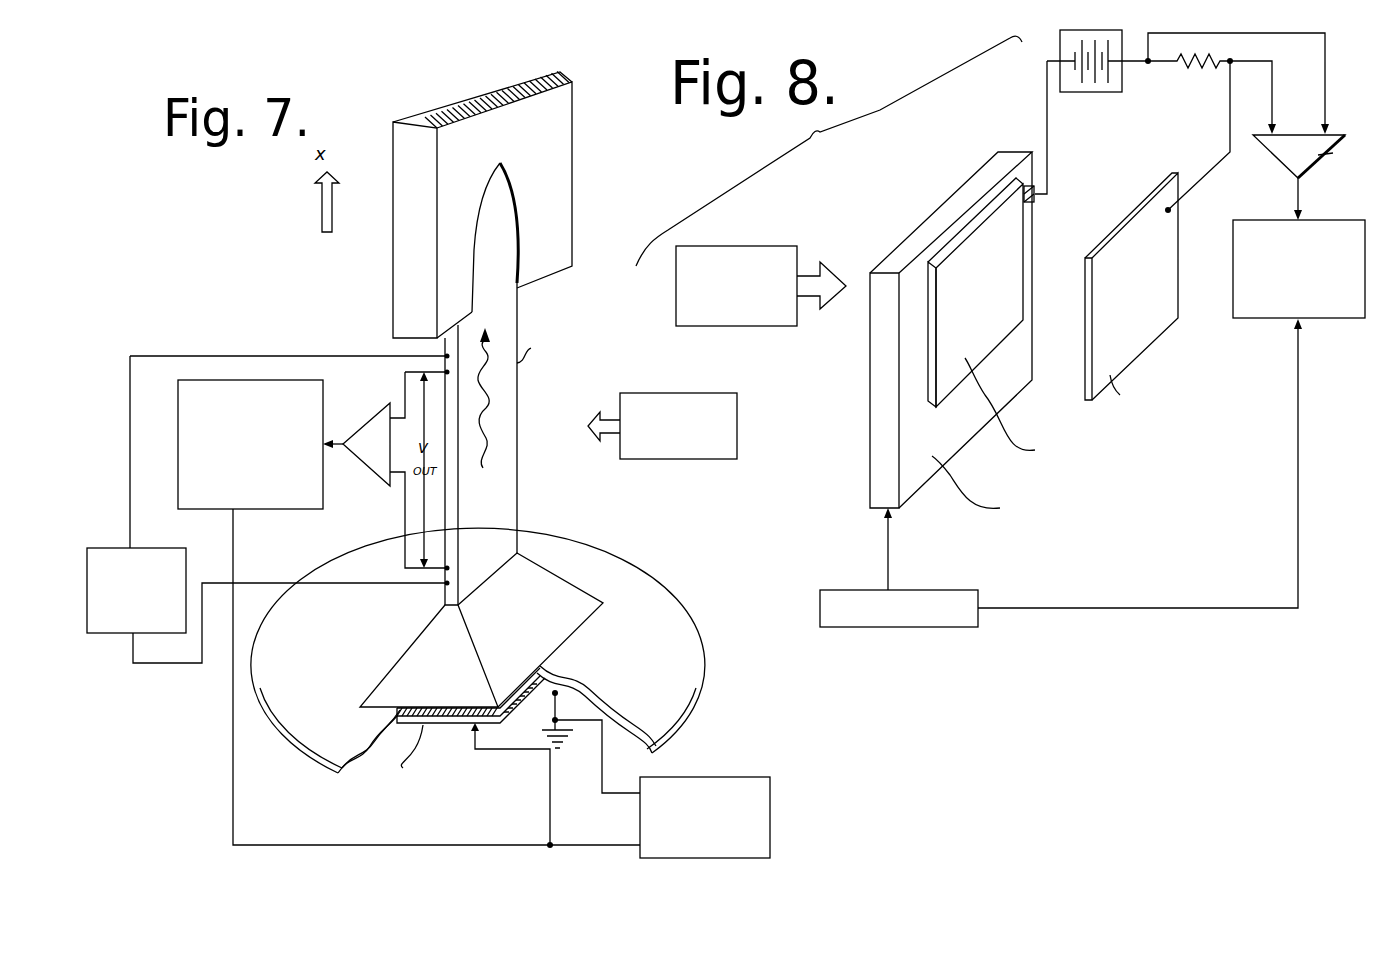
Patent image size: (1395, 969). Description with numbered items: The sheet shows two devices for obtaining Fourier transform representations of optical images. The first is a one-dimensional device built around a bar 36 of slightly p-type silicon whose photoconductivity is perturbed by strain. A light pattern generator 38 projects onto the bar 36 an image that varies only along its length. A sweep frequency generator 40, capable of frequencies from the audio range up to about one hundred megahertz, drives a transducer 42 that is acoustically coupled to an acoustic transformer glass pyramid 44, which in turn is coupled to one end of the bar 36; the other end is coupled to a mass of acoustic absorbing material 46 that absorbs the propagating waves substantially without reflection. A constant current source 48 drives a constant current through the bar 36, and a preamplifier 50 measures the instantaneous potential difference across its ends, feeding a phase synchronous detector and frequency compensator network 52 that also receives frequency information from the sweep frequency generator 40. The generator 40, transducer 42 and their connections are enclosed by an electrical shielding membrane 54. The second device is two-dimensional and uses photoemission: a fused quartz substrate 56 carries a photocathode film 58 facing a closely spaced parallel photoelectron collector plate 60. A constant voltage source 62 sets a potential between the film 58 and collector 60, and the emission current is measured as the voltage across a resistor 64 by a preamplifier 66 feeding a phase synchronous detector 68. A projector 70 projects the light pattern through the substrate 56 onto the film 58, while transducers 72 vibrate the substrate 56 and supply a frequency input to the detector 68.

In FIG. 7, the bar 36 is at (518, 306).
In FIG. 7, the light pattern generator 38 is at (645, 460).
In FIG. 7, the sweep frequency generator 40 is at (702, 776).
In FIG. 7, the transducer 42 is at (471, 735).
In FIG. 7, the acoustic transformer glass pyramid 44 is at (585, 612).
In FIG. 7, the acoustic absorbing material 46 is at (557, 197).
In FIG. 7, the constant current source 48 is at (160, 547).
In FIG. 7, the preamplifier 50 is at (356, 425).
In FIG. 7, the phase synchronous detector and frequency compensator network 52 is at (262, 500).
In FIG. 7, the electrical shielding membrane 54 is at (683, 664).
In FIG. 8, the substrate 56 is at (933, 213).
In FIG. 8, the photocathode film 58 is at (977, 233).
In FIG. 8, the photoelectron collector plate 60 is at (1137, 233).
In FIG. 8, the constant voltage source 62 is at (1082, 85).
In FIG. 8, the resistor 64 is at (1197, 68).
In FIG. 8, the preamplifier 66 is at (1352, 118).
In FIG. 8, the phase synchronous detector 68 is at (1325, 312).
In FIG. 8, the projector 70 is at (716, 246).
In FIG. 8, the transducers 72 is at (893, 628).